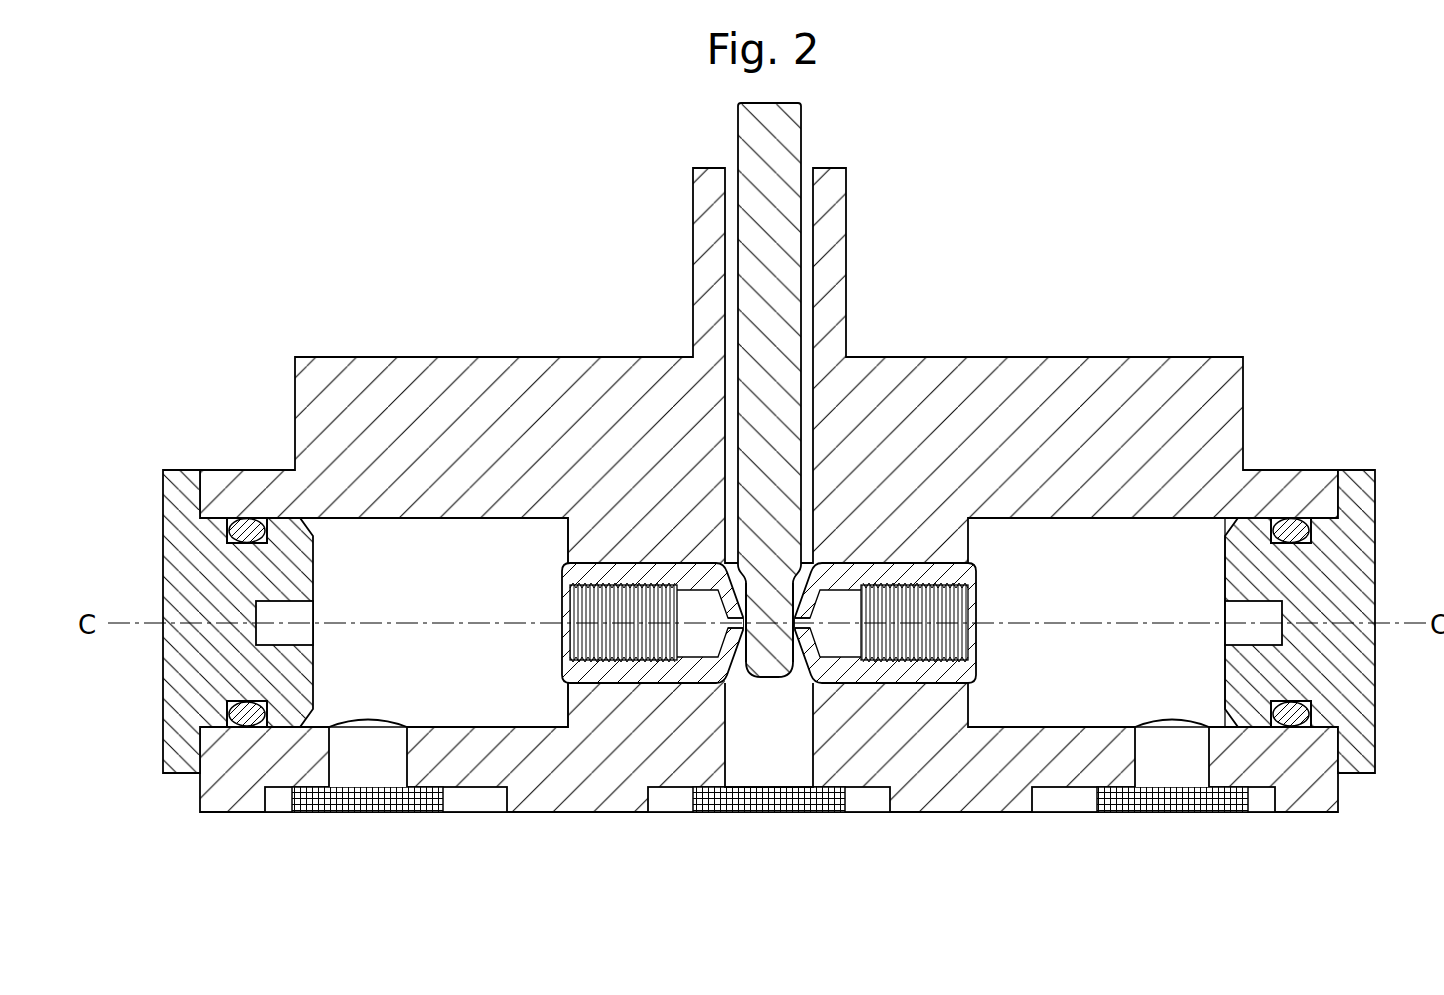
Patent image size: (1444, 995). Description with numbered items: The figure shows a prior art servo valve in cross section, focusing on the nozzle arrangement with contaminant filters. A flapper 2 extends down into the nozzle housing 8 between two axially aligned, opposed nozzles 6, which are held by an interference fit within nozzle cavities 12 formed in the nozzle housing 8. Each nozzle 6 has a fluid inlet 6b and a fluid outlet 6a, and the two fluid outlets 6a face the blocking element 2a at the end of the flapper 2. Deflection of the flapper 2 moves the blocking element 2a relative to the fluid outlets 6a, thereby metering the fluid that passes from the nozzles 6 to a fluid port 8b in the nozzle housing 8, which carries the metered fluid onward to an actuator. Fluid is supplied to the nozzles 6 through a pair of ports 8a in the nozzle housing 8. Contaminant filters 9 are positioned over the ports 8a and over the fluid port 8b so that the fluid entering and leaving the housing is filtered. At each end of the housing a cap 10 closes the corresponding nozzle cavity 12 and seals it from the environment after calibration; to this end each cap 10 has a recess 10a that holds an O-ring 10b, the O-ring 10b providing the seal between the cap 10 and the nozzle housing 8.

The flapper 2 is at (765, 208).
The blocking element 2a is at (760, 656).
The nozzle 6 is at (636, 684).
The fluid outlet 6a is at (727, 625).
The fluid inlet 6b is at (577, 635).
The nozzle housing 8 is at (472, 415).
The port 8a is at (360, 772).
The fluid port 8b is at (793, 775).
The contaminant filter 9 is at (405, 800).
The cap 10 is at (203, 561).
The recess 10a is at (1314, 524).
The O-ring 10b is at (1290, 526).
The nozzle cavity 12 is at (372, 535).